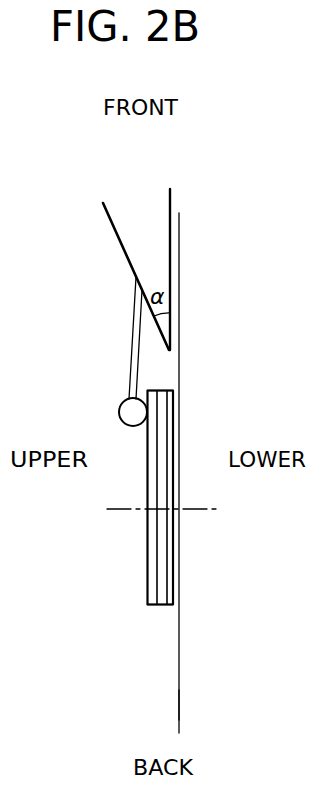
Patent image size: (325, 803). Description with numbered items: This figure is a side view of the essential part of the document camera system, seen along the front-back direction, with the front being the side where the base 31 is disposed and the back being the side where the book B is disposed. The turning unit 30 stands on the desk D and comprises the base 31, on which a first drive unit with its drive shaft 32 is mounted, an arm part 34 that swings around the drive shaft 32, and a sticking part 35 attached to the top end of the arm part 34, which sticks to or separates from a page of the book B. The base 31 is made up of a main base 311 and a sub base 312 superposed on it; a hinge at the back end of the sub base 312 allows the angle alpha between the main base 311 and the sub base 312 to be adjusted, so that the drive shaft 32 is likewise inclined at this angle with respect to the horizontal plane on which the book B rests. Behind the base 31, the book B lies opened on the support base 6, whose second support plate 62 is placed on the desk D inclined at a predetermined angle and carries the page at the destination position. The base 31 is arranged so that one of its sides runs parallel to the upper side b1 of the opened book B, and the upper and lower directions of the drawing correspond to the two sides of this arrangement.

The turning unit 30 is at (203, 176).
The base 31 is at (172, 197).
The main base 311 is at (174, 249).
The sub base 312 is at (114, 236).
The drive shaft 32 is at (104, 276).
The arm part 34 is at (132, 345).
The sticking part 35 is at (123, 403).
The support base 6 is at (213, 498).
The second support plate 62 is at (165, 573).
The upper side of the book b1 is at (152, 390).
The book B is at (143, 596).
The desk D is at (178, 702).